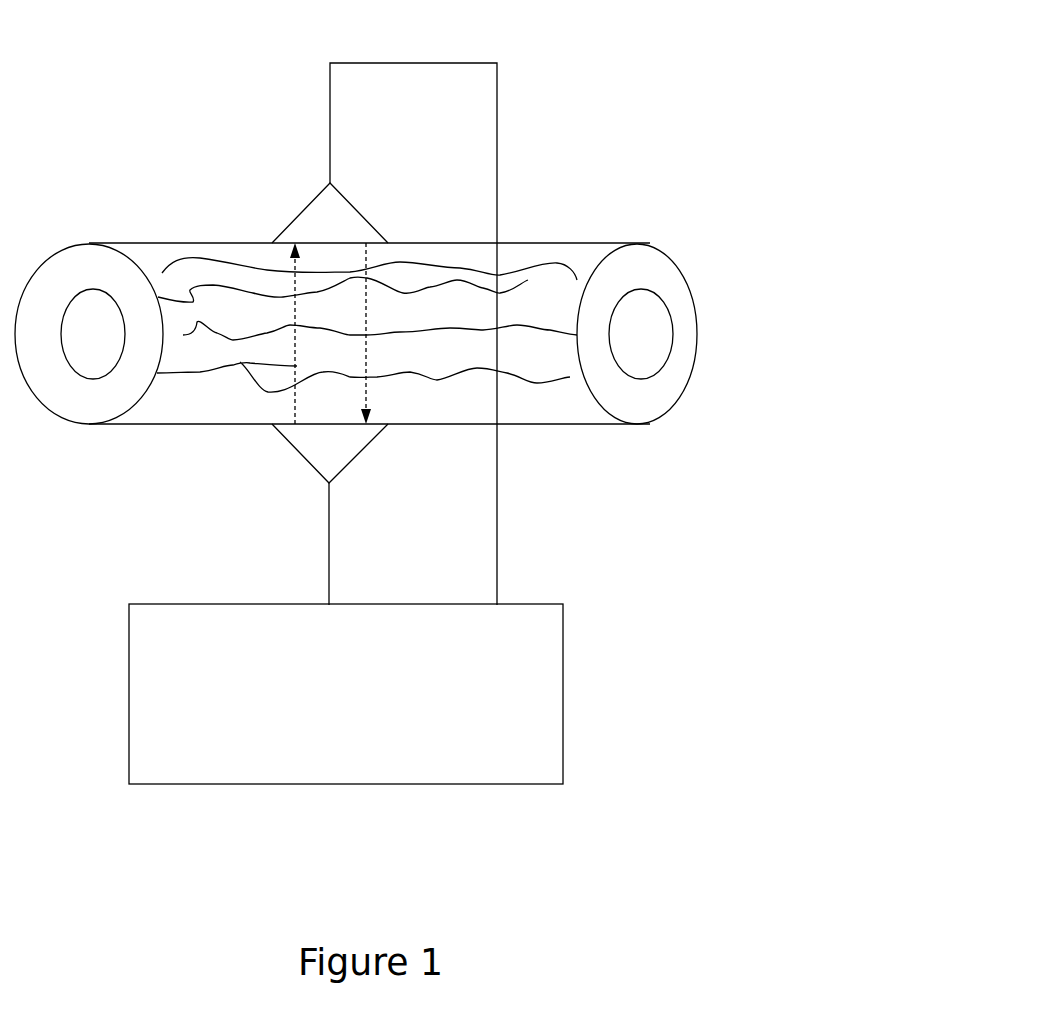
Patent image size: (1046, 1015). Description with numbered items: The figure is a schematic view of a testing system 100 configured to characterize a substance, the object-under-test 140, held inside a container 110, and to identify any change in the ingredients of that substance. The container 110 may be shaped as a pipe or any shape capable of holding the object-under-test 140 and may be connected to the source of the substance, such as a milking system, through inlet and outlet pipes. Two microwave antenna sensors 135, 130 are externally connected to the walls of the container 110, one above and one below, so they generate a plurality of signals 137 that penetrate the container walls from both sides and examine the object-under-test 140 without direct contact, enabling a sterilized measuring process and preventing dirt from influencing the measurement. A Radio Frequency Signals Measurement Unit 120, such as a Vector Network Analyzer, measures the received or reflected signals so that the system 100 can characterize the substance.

The testing system 100 is at (910, 22).
The container 110 is at (563, 243).
The Radio Frequency Signals Measurement Unit 120 is at (563, 660).
The antenna sensor 130 is at (302, 462).
The antenna sensor 135 is at (305, 207).
The signals 137 is at (370, 333).
The object-under-test 140 is at (214, 254).